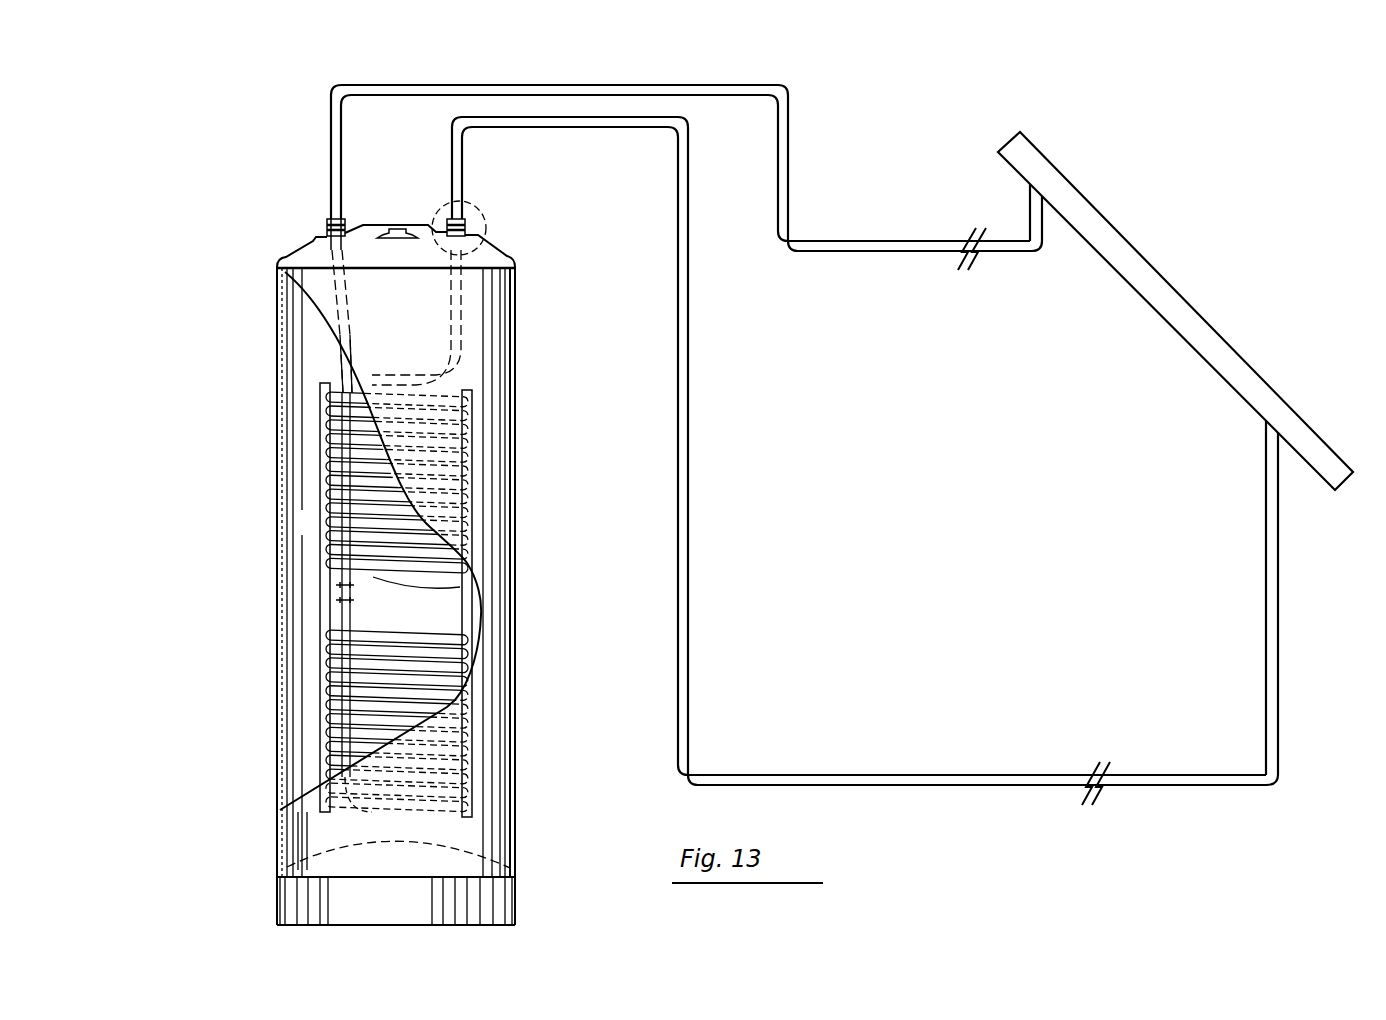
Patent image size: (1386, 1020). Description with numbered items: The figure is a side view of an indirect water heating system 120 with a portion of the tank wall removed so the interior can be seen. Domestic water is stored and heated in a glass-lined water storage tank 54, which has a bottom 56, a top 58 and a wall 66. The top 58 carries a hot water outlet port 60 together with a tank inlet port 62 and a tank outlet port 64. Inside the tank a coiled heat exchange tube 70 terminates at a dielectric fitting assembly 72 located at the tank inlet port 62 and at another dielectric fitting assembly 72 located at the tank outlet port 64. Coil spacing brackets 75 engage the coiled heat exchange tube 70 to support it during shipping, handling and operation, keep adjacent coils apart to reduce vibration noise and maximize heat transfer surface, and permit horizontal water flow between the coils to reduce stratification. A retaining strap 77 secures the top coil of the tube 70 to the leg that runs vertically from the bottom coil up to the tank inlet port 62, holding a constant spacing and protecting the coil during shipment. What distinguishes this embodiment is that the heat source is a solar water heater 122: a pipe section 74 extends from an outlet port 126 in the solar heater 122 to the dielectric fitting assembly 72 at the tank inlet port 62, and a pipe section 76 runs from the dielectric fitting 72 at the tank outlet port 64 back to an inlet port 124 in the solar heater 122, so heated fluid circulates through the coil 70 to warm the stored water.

The water storage tank 54 is at (518, 545).
The bottom 56 is at (298, 858).
The top 58 is at (288, 258).
The hot water outlet port 60 is at (400, 230).
The tank inlet port 62 is at (327, 232).
The tank outlet port 64 is at (467, 228).
The wall 66 is at (303, 530).
The coiled heat exchange tube 70 is at (322, 562).
The dielectric fitting assembly 72 is at (326, 218).
The pipe section 74 is at (832, 253).
The coil spacing bracket 75 is at (340, 585).
The pipe section 76 is at (823, 775).
The retaining strap 77 is at (328, 395).
The indirect water heating system 120 is at (248, 718).
The solar water heater 122 is at (1192, 297).
The inlet port 124 is at (1268, 424).
The outlet port 126 is at (1028, 183).